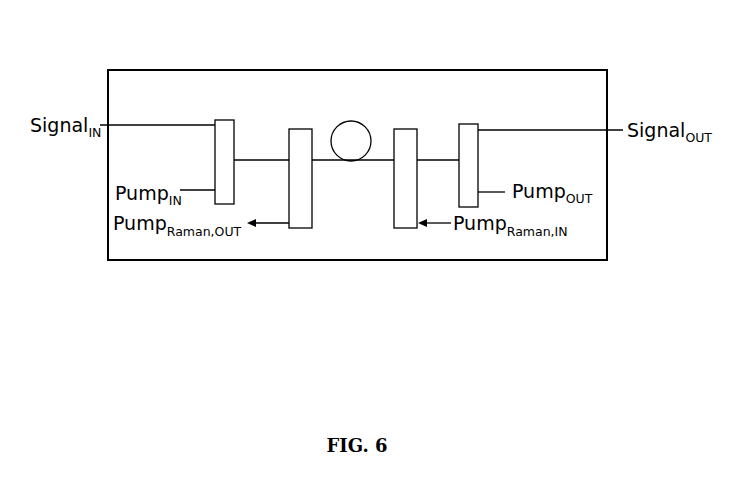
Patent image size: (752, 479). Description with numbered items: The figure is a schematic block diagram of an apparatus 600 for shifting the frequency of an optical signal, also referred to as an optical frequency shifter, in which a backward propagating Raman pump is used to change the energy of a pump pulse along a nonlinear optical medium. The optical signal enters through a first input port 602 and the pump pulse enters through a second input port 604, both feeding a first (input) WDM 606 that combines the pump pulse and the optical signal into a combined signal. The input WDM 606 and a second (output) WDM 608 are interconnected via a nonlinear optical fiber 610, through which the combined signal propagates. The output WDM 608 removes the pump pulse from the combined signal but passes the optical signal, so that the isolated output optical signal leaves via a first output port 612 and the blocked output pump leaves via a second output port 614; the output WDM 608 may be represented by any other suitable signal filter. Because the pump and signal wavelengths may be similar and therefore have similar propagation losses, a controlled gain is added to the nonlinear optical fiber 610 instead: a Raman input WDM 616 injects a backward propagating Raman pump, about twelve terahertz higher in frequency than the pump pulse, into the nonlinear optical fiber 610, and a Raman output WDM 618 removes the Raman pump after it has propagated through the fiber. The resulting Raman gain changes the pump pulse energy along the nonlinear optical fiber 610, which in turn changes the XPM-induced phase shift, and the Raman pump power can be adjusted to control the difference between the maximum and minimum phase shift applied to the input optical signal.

The apparatus 600 is at (580, 69).
The first input port 602 is at (162, 122).
The second input port 604 is at (189, 188).
The first (input) WDM 606 is at (227, 117).
The second (output) WDM 608 is at (468, 122).
The nonlinear optical fiber 610 is at (354, 118).
The first output port 612 is at (546, 129).
The second output port 614 is at (496, 190).
The Raman input wavelength-division multiplexer 616 is at (411, 124).
The Raman output WDM 618 is at (298, 124).